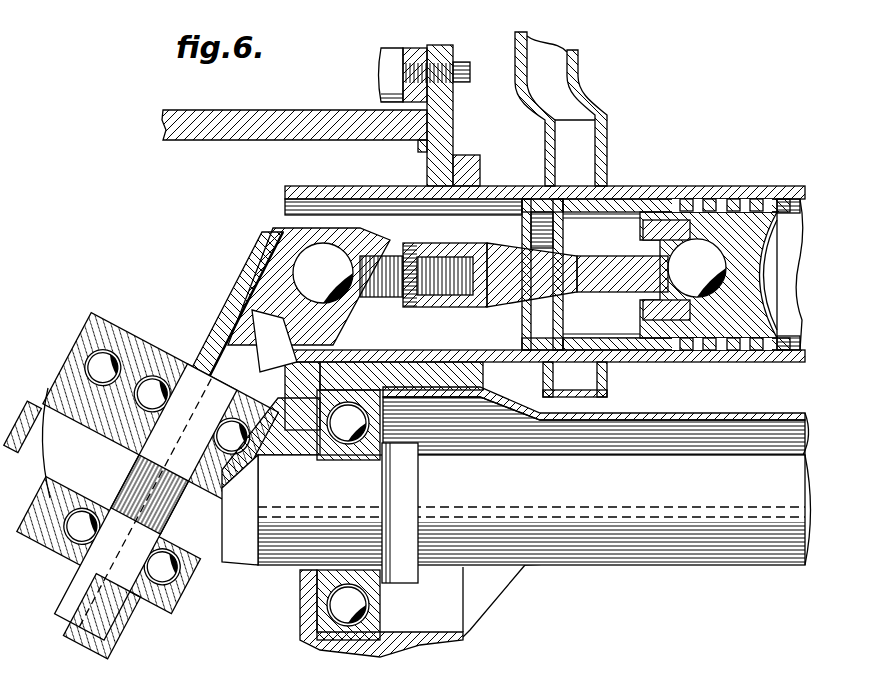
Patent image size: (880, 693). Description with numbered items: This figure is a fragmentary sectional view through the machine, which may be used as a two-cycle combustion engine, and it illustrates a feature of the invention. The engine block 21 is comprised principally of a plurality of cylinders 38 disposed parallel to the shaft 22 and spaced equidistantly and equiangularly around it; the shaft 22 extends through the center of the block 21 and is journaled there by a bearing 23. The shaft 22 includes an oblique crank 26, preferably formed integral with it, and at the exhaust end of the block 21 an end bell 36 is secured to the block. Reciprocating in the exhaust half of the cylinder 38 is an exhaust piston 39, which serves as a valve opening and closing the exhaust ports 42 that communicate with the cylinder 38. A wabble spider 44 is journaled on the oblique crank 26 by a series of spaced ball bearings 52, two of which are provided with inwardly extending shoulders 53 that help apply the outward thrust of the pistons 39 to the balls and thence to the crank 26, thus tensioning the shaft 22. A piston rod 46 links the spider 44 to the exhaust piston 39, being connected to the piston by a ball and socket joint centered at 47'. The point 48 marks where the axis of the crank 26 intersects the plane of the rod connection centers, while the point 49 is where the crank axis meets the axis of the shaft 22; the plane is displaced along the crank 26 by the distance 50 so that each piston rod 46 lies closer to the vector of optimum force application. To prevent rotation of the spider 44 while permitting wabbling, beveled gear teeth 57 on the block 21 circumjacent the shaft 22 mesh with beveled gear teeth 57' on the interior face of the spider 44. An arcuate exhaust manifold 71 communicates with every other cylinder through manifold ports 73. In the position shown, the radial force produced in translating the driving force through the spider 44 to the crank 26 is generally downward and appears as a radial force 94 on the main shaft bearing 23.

The block 21 is at (688, 186).
The shaft 22 is at (661, 567).
The bearing 23 is at (320, 624).
The oblique crank 26 is at (67, 396).
The end bell 36 is at (300, 112).
The cylinder 38 is at (738, 186).
The exhaust piston 39 is at (778, 186).
The exhaust port 42 is at (333, 280).
The wabble spider 44 is at (275, 235).
The piston rod 46 is at (471, 309).
The ball and socket joint center 47' is at (684, 270).
The intersection point 48 is at (213, 508).
The intersection point 49 is at (234, 517).
The displacement distance 50 is at (230, 503).
The ball bearing 52 is at (143, 396).
The inwardly extending shoulder 53 is at (105, 356).
The beveled gear teeth 57 is at (274, 341).
The beveled gear teeth 57' is at (112, 616).
The exhaust manifold 71 is at (538, 82).
The manifold port 73 is at (549, 146).
The radial force 94 is at (348, 580).